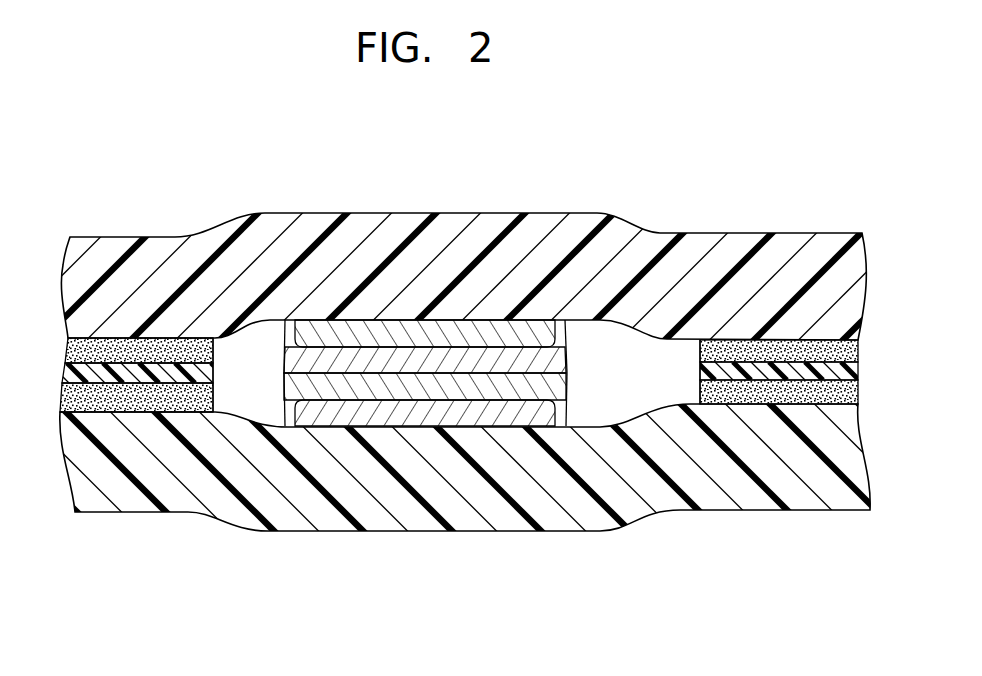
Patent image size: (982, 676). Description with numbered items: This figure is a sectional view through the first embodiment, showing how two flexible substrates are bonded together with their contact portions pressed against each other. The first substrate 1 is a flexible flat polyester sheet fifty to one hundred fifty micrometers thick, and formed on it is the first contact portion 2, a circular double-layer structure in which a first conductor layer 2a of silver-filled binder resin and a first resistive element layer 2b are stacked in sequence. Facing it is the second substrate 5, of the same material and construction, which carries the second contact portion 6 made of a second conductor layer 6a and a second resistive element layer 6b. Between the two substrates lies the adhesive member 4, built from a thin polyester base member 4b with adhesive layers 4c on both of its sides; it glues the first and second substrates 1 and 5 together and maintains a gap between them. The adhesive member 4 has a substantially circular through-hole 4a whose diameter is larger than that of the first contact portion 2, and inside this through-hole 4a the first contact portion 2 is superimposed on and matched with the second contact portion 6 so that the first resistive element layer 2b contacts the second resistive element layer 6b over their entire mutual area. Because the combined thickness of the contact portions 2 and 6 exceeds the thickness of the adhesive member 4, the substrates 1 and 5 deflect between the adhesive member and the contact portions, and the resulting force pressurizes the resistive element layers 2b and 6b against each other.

The first substrate 1 is at (577, 263).
The first contact portion 2 is at (387, 167).
The first conductor layer 2a is at (412, 335).
The first resistive element layer 2b is at (490, 360).
The adhesive member 4 is at (58, 167).
The through-hole 4a is at (243, 367).
The base member 4b is at (103, 357).
The adhesive layers 4c is at (177, 392).
The second substrate 5 is at (578, 498).
The second contact portion 6 is at (490, 596).
The second conductor layer 6a is at (385, 414).
The second resistive element layer 6b is at (478, 392).